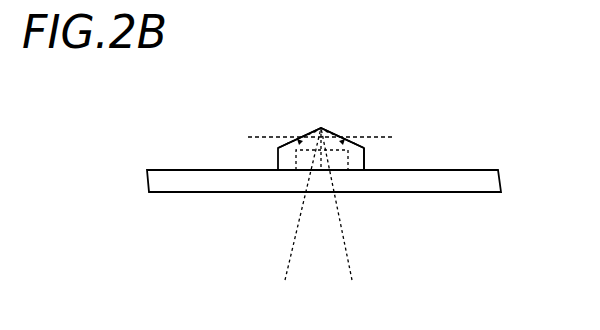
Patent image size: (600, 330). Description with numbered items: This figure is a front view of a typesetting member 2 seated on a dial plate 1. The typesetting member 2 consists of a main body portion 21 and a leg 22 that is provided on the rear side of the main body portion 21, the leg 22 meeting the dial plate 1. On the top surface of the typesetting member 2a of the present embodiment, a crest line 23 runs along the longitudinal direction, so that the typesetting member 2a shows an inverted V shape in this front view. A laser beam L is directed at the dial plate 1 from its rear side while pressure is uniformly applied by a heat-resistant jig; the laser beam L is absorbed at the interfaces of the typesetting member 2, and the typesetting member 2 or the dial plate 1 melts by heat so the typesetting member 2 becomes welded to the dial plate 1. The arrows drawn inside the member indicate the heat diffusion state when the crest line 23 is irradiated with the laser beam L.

The dial plate 1 is at (190, 193).
The typesetting member 2 is at (276, 148).
The typesetting member 2a is at (270, 156).
The main body portion 21 is at (366, 163).
The leg 22 is at (326, 181).
The crest line 23 is at (324, 118).
The laser beam L is at (280, 258).